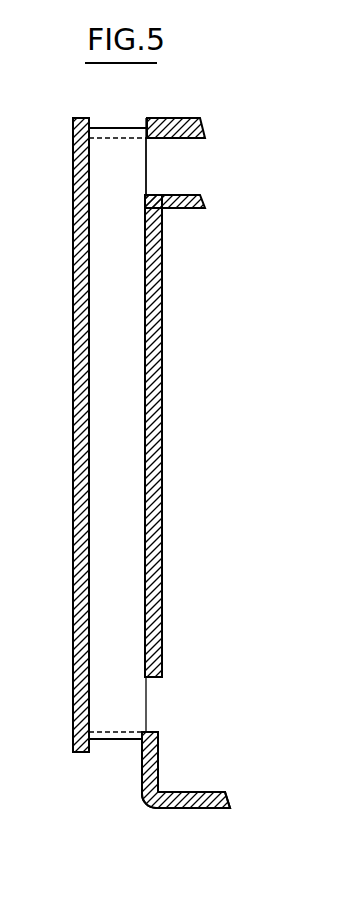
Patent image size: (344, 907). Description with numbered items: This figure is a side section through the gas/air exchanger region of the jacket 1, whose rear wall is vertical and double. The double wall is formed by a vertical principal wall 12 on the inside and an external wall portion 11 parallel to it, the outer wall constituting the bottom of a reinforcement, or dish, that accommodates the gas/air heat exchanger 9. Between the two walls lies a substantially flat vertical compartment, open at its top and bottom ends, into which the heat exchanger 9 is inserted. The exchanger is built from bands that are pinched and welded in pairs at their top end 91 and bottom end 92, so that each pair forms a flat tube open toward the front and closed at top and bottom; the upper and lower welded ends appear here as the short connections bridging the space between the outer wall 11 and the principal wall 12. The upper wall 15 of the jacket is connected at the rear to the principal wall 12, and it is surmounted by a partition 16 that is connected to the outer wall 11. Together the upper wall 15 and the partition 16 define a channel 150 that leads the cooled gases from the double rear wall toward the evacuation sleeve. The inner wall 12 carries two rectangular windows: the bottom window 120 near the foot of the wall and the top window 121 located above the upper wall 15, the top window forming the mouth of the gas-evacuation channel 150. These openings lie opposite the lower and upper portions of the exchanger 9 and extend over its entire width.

The jacket 1 is at (188, 811).
The gas/air heat exchanger 9 is at (107, 237).
The external wall portion 11 is at (72, 490).
The vertical principal wall 12 is at (162, 448).
The upper wall 15 is at (195, 209).
The partition 16 is at (183, 118).
The top end 91 is at (113, 127).
The bottom end 92 is at (113, 742).
The bottom window 120 is at (157, 703).
The top window 121 is at (146, 173).
The channel 150 is at (183, 161).